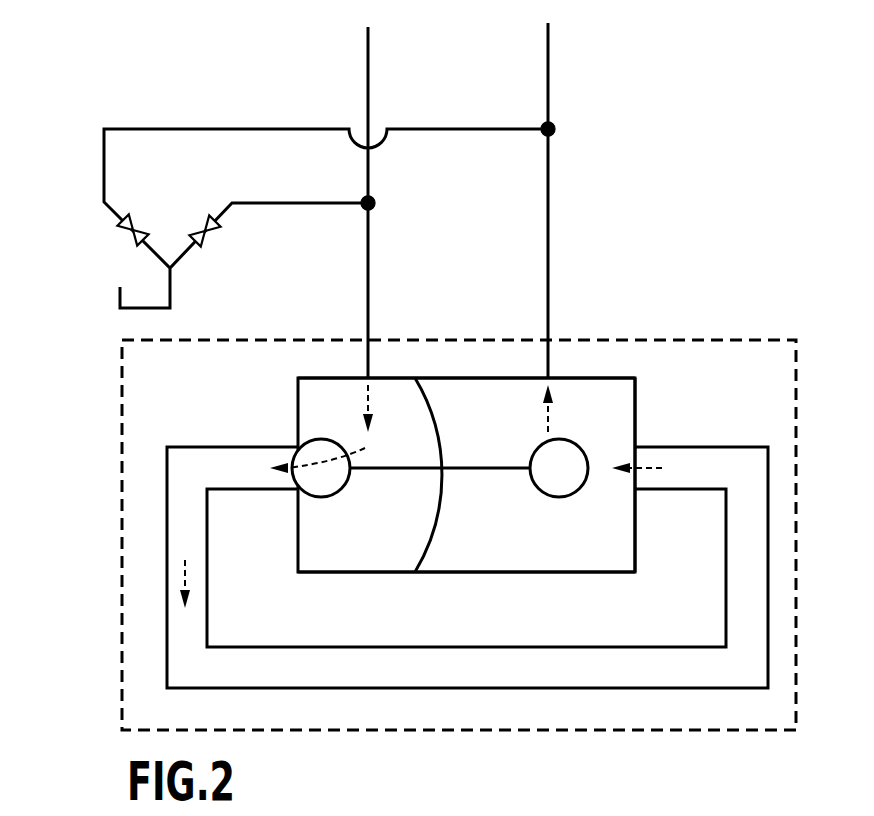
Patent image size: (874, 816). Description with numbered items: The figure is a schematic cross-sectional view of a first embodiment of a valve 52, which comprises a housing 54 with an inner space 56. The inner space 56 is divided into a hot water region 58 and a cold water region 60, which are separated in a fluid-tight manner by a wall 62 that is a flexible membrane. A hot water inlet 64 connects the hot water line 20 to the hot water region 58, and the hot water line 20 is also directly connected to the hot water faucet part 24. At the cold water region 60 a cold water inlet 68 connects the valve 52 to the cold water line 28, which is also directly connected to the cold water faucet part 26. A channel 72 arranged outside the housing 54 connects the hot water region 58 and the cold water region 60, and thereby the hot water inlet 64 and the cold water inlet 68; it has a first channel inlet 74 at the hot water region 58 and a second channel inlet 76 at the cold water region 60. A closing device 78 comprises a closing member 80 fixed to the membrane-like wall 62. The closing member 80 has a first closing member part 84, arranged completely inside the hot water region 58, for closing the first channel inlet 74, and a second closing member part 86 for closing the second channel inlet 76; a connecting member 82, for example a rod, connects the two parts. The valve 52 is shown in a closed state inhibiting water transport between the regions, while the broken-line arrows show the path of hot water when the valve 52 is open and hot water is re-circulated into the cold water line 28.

The hot water line 20 is at (368, 78).
The hot water faucet part 24 is at (186, 253).
The cold water faucet part 26 is at (110, 212).
The cold water line 28 is at (548, 200).
The valve 52 is at (816, 322).
The housing 54 is at (597, 378).
The inner space 56 is at (540, 557).
The hot water region 58 is at (332, 553).
The cold water region 60 is at (605, 555).
The wall 62 is at (437, 543).
The hot water inlet 64 is at (366, 376).
The cold water inlet 68 is at (548, 376).
The channel 72 is at (460, 670).
The first channel inlet 74 is at (295, 452).
The second channel inlet 76 is at (636, 458).
The closing device 78 is at (434, 348).
The closing member 80 is at (473, 488).
The connecting member 82 is at (385, 465).
The first closing member part 84 is at (330, 483).
The second closing member part 86 is at (567, 457).